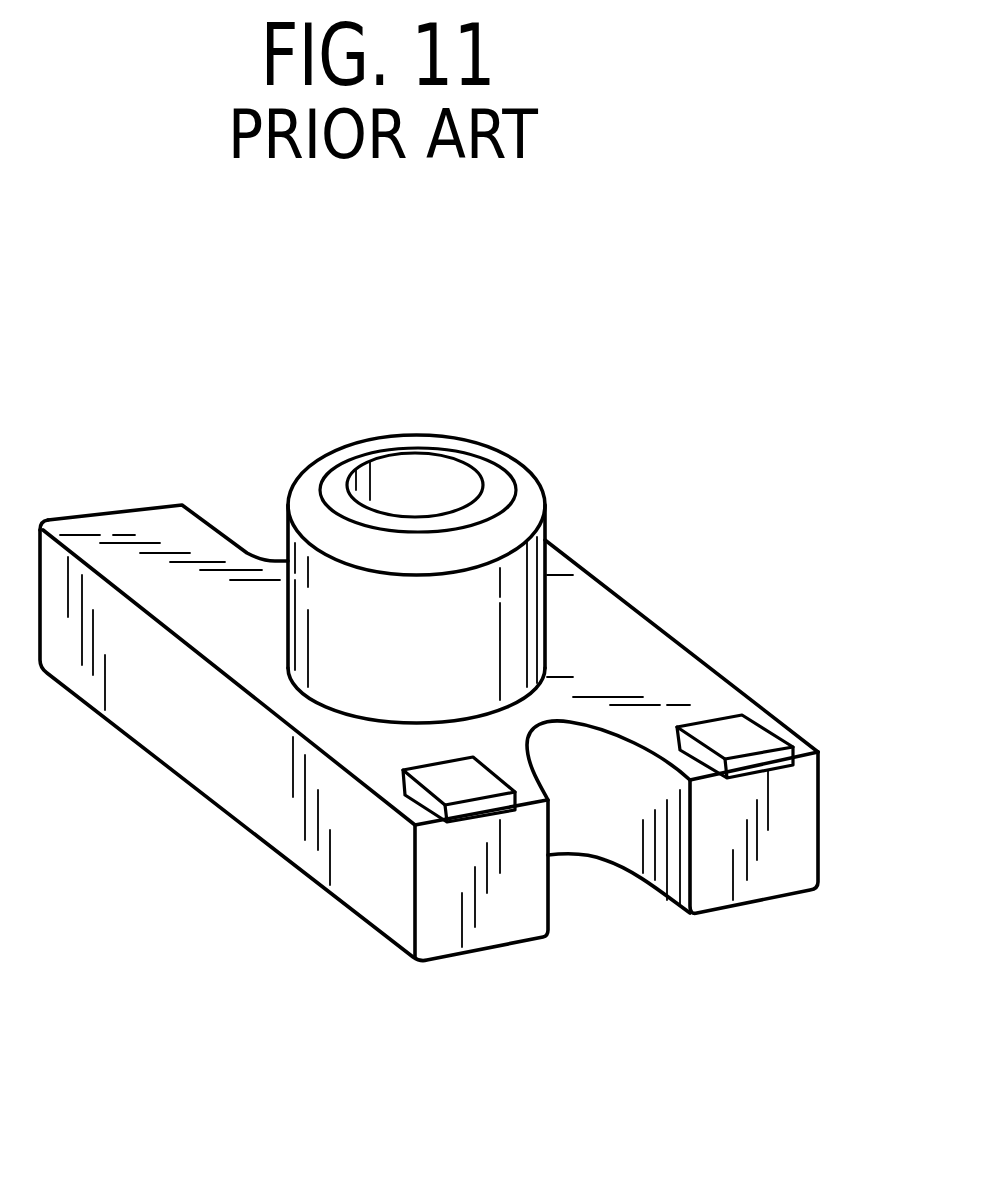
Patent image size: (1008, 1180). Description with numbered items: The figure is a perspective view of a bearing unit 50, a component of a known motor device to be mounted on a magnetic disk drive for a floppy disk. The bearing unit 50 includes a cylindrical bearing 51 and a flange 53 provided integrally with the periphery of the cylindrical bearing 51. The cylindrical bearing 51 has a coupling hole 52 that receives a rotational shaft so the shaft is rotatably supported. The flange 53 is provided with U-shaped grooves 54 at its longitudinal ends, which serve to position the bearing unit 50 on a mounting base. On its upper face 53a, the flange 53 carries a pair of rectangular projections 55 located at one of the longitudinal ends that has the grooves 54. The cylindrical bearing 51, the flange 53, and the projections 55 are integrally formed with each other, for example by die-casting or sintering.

The bearing unit 50 is at (624, 410).
The cylindrical bearing 51 is at (547, 570).
The coupling hole 52 is at (412, 467).
The flange 53 is at (245, 750).
The upper face 53a is at (630, 682).
The U-shaped groove 54 is at (232, 513).
The rectangular projection 55 is at (745, 737).